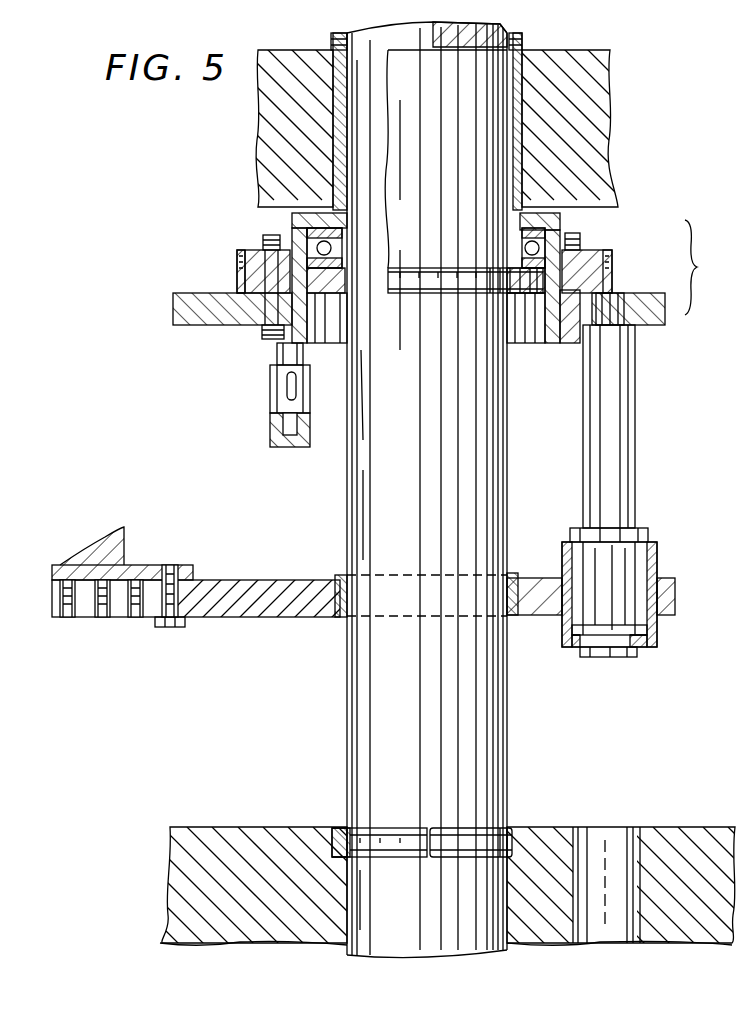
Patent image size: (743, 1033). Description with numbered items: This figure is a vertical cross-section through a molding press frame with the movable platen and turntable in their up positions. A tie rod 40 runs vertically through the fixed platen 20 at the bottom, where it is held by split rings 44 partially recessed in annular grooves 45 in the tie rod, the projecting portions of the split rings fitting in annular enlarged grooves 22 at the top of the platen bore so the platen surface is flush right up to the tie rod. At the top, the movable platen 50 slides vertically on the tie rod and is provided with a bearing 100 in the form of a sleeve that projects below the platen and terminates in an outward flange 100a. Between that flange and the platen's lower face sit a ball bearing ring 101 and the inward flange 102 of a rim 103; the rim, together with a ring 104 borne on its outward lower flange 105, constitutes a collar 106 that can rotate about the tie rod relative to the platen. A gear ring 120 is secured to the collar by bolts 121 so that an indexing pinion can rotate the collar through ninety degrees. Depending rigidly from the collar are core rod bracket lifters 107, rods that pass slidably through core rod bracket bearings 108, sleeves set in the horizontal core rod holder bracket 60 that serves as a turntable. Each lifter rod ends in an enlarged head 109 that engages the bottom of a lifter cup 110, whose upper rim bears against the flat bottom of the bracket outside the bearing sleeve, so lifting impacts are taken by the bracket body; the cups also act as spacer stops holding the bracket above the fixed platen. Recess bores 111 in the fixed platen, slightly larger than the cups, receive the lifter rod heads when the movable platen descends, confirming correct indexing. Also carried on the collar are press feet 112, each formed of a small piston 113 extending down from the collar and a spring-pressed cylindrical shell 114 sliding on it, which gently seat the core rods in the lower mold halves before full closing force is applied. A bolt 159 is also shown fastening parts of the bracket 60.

The movable platen 50 is at (596, 92).
The bearing 100 is at (333, 155).
The tie rod 40 is at (364, 502).
The outward flange 100a is at (330, 280).
The inward flange 102 is at (314, 218).
The ball bearing ring 101 is at (342, 243).
The rim 103 is at (296, 233).
The bolts 121 is at (262, 242).
The gear ring 120 is at (247, 275).
The collar 106 is at (651, 267).
The ring 104 is at (183, 323).
The outward lower flange 105 is at (270, 332).
The small piston 113 is at (282, 355).
The press feet 112 is at (262, 405).
The cylindrical shell 114 is at (272, 435).
The core rod bracket lifter 107 is at (625, 403).
The core rod bracket bearing 108 is at (657, 565).
The lifter cup 110 is at (660, 640).
The enlarged head 109 is at (610, 658).
The core rod holder bracket 60 is at (299, 580).
The bolt 159 is at (187, 626).
The fixed platen 20 is at (178, 841).
The recess bores 111 is at (583, 836).
The annular grooves 45 is at (352, 826).
The split rings 44 is at (441, 841).
The annular enlarged grooves 22 is at (331, 840).